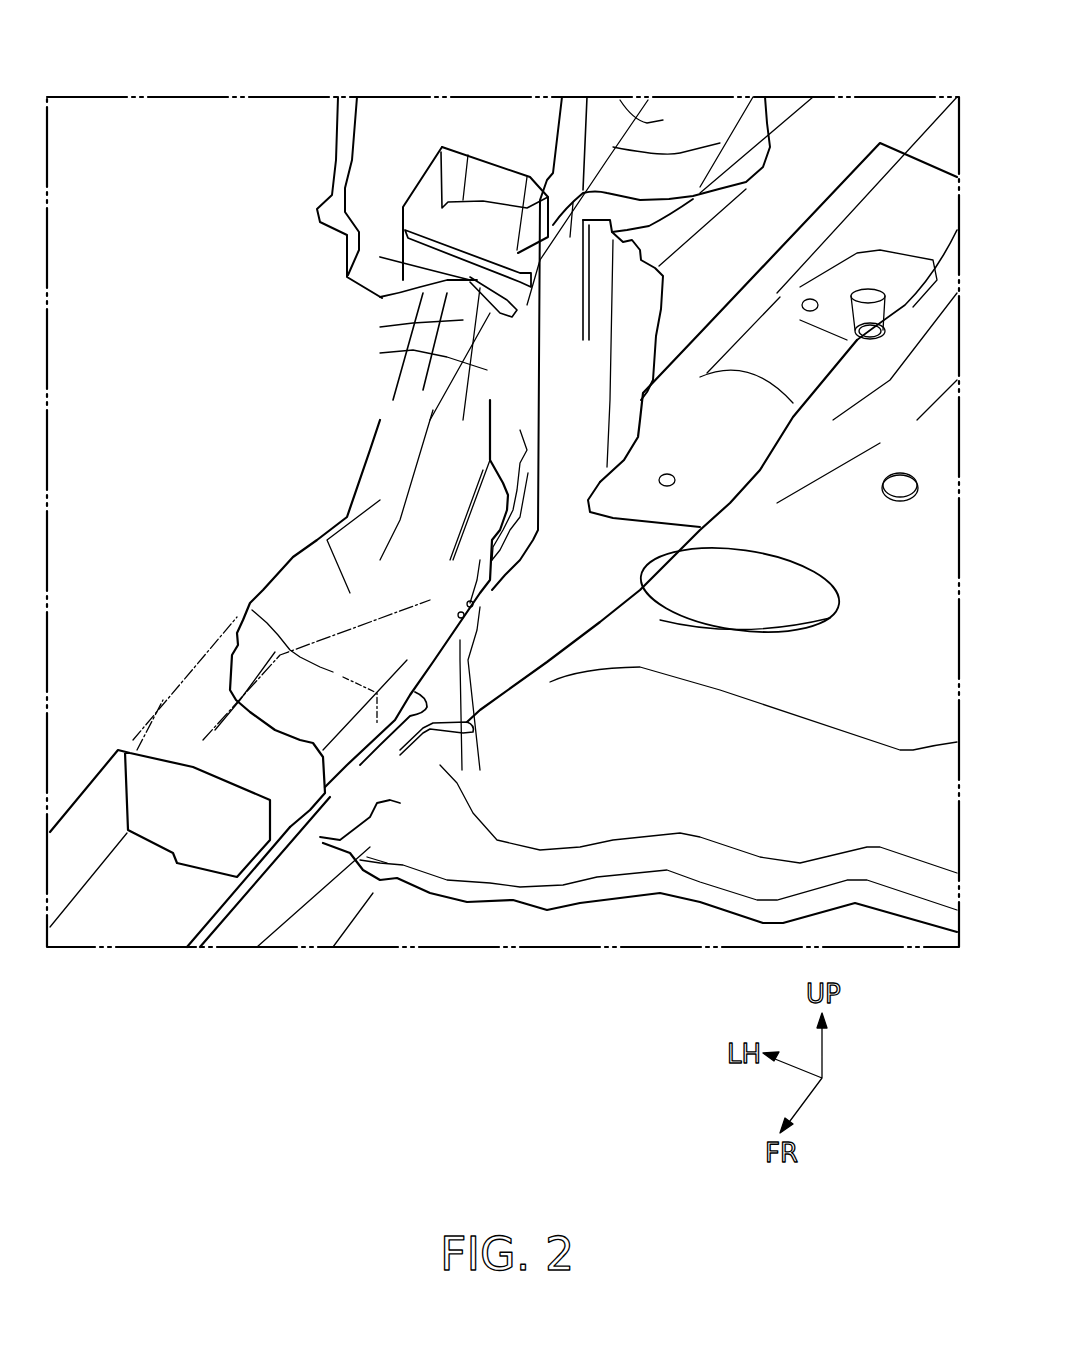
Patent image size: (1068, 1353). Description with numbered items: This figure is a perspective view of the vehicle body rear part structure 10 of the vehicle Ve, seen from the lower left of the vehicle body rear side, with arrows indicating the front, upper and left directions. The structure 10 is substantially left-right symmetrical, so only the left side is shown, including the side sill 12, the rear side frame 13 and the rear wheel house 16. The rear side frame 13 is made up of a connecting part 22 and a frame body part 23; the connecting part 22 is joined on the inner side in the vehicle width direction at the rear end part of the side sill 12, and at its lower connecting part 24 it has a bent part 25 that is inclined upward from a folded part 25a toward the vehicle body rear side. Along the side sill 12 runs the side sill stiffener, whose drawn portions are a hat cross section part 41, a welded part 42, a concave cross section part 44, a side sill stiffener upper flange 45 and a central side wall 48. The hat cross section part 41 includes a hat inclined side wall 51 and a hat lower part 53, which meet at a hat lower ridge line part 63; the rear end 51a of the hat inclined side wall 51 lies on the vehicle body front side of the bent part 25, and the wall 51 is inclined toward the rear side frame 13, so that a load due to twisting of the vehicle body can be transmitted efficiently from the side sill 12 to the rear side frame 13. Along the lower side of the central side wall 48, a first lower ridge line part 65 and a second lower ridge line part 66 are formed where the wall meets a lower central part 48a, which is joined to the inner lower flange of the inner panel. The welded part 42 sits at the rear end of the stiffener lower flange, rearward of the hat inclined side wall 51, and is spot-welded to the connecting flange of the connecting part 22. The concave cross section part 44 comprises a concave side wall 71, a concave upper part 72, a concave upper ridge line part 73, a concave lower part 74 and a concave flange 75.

The vehicle body rear part structure 10 is at (558, 84).
The side sill 12 is at (153, 920).
The rear side frame 13 is at (828, 367).
The rear wheel house 16 is at (340, 114).
The connecting part 22 is at (633, 577).
The frame body part 23 is at (940, 137).
The lower connecting part 24 is at (490, 677).
The bent part 25 is at (543, 550).
The folded part 25a is at (480, 550).
The hat cross section part 41 is at (306, 552).
The welded part 42 is at (470, 604).
The concave cross section part 44 is at (420, 460).
The side sill stiffener upper flange 45 is at (385, 437).
The central side wall 48 is at (443, 483).
The lower central part 48a is at (478, 520).
The hat inclined side wall 51 is at (330, 540).
The rear end of hat inclined side wall 51a is at (380, 497).
The hat lower part 53 is at (373, 620).
The hat lower ridge line part 63 is at (350, 633).
The first lower ridge line part 65 is at (427, 560).
The second lower ridge line part 66 is at (478, 507).
The concave side wall 71 is at (523, 313).
The concave upper part 72 is at (347, 277).
The concave upper ridge line part 73 is at (380, 257).
The concave lower part 74 is at (472, 326).
The concave flange 75 is at (380, 326).